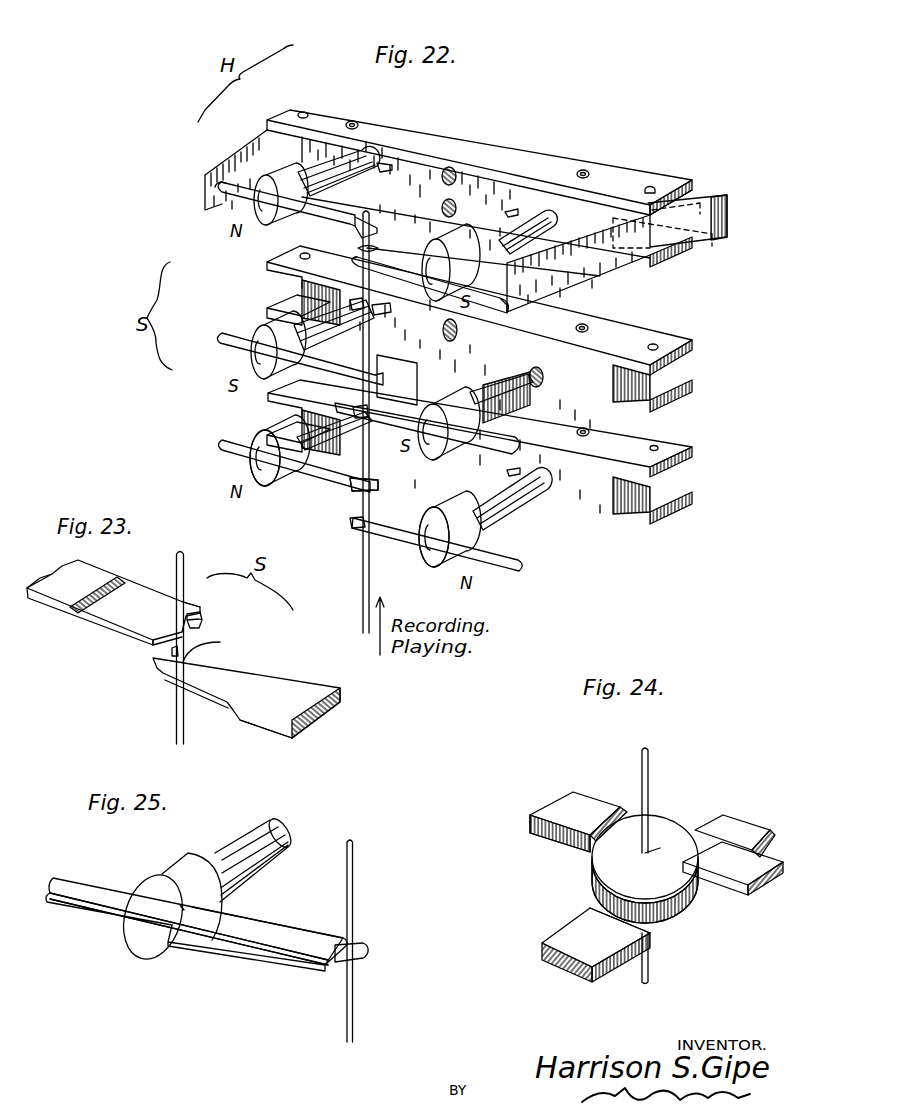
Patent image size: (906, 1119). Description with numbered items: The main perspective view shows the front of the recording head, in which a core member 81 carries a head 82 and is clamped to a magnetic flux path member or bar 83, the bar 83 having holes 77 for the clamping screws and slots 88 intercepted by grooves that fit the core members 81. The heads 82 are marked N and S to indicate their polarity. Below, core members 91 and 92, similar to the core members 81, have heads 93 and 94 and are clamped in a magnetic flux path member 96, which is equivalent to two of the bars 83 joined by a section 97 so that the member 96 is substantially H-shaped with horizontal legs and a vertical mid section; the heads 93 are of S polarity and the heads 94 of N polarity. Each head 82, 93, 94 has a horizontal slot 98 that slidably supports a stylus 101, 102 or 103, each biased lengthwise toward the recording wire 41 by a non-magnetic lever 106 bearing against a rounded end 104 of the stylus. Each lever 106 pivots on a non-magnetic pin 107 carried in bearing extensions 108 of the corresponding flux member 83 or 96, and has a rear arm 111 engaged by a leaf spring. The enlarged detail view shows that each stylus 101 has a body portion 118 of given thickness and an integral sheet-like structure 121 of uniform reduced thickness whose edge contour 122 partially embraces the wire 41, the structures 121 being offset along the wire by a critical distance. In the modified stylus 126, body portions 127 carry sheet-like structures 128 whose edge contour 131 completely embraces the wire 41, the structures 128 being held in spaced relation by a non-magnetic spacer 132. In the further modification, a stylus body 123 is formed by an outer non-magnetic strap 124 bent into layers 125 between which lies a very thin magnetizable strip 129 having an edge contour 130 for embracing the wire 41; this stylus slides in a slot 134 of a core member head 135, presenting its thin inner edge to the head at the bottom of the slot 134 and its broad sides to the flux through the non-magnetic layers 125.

In FIG. 22, the recording element or wire 41 is at (359, 550).
In FIG. 23, the recording element or wire 41 is at (173, 712).
In FIG. 25, the recording element or wire 41 is at (355, 901).
In FIG. 24, the recording element or wire 41 is at (641, 768).
In FIG. 22, the holes 77 is at (358, 122).
In FIG. 22, the core member 81 is at (323, 168).
In FIG. 22, the head 82 is at (276, 226).
In FIG. 22, the magnetic flux path member or bar 83 is at (465, 141).
In FIG. 22, the slots 88 is at (393, 168).
In FIG. 22, the core member 91 is at (351, 300).
In FIG. 22, the core member 92 is at (326, 448).
In FIG. 22, the head 93 is at (265, 333).
In FIG. 22, the head 94 is at (279, 488).
In FIG. 22, the magnetic flux path member 96 is at (644, 330).
In FIG. 22, the section 97 is at (417, 376).
In FIG. 22, the horizontal slot 98 is at (465, 278).
In FIG. 22, the recording and reproducing stylus 101 is at (320, 220).
In FIG. 23, the recording and reproducing stylus 101 is at (114, 573).
In FIG. 22, the stylus 102 is at (233, 352).
In FIG. 22, the stylus 103 is at (328, 490).
In FIG. 22, the rounded end 104 is at (537, 570).
In FIG. 22, the non-magnetic lever 106 is at (227, 162).
In FIG. 22, the non-magnetic pin 107 is at (301, 111).
In FIG. 22, the bearing extensions 108 is at (700, 172).
In FIG. 22, the rear arm 111 is at (728, 214).
In FIG. 22, the body means or portion 118 is at (240, 200).
In FIG. 23, the body means or portion 118 is at (56, 611).
In FIG. 22, the sheet-like structure 121 is at (350, 228).
In FIG. 23, the sheet-like structure 121 is at (114, 632).
In FIG. 23, the edge contour 122 is at (202, 617).
In FIG. 25, the stylus body means 123 is at (300, 915).
In FIG. 25, the outer non-magnetic strap or element 124 is at (62, 877).
In FIG. 25, the layers or laminae 125 is at (215, 928).
In FIG. 24, the recording and reproducing stylus 126 is at (577, 907).
In FIG. 24, the body portions 127 is at (530, 834).
In FIG. 24, the sheet-like structure 128 is at (658, 820).
In FIG. 25, the magnetizable strip 129 is at (252, 948).
In FIG. 25, the edge contour 130 is at (337, 968).
In FIG. 24, the edge contour 131 is at (660, 848).
In FIG. 24, the non-magnetic spacer 132 is at (613, 905).
In FIG. 25, the slot 134 is at (187, 904).
In FIG. 25, the core member head 135 is at (172, 858).